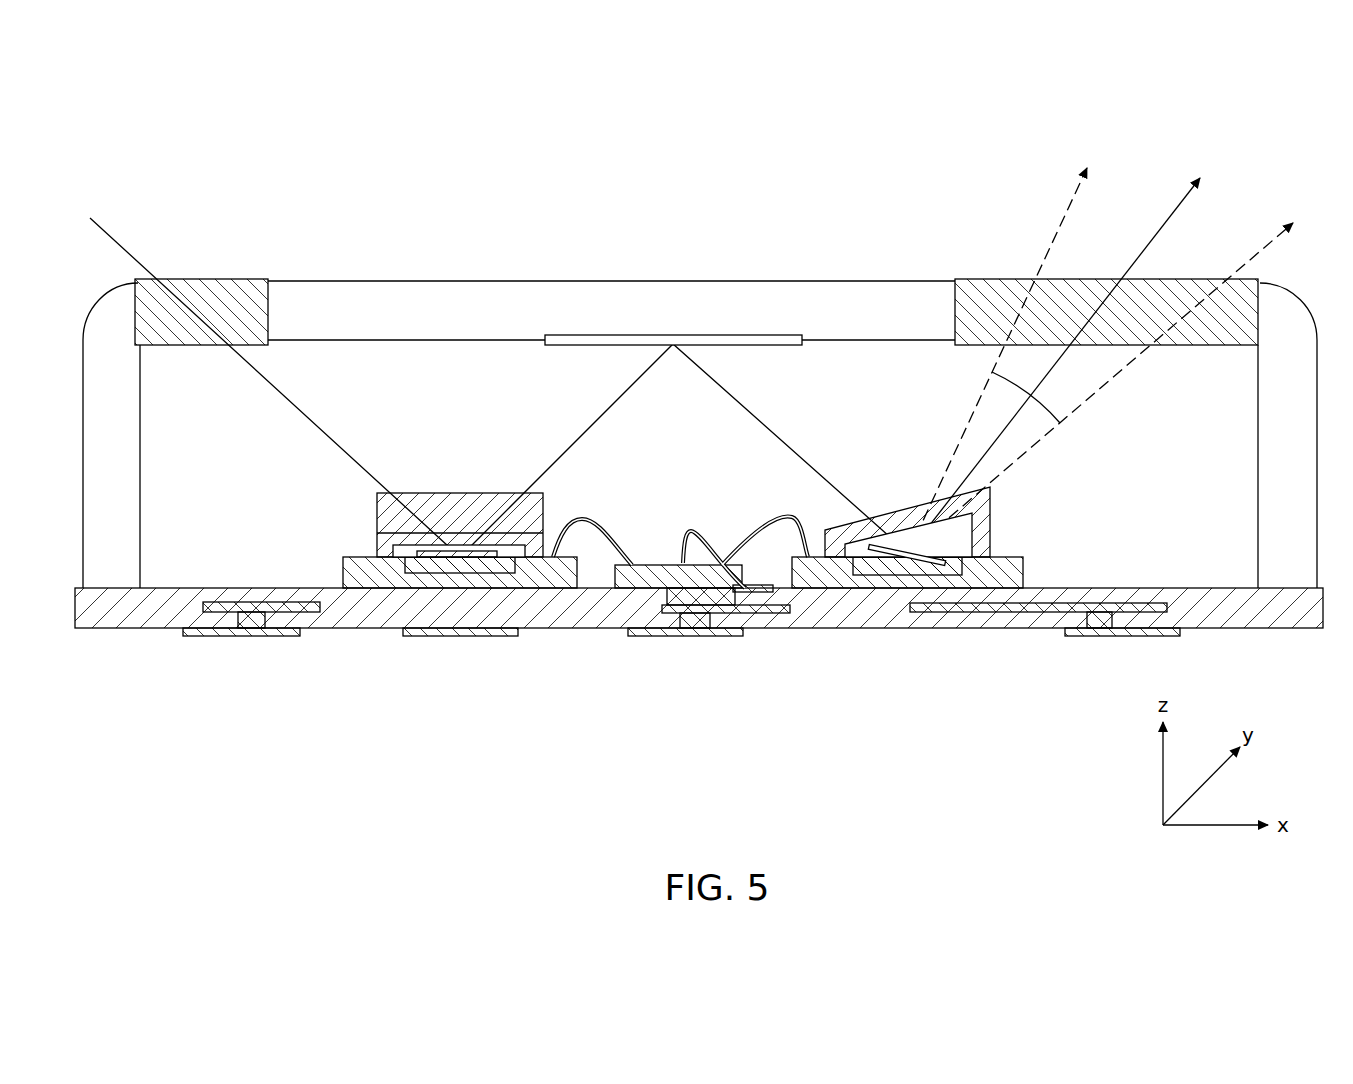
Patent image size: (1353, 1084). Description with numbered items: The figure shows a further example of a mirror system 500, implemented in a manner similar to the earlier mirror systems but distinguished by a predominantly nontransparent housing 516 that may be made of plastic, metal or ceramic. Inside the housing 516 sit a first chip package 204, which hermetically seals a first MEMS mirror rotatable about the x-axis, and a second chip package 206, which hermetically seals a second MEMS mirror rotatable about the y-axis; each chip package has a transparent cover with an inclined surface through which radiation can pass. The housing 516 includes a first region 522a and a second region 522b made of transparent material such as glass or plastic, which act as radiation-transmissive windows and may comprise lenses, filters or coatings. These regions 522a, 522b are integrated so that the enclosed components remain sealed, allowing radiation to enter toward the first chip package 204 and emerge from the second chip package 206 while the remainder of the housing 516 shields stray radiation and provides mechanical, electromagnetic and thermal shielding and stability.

The mirror system 500 is at (1203, 135).
The housing 516 is at (856, 282).
The first region 522a is at (228, 292).
The second region 522b is at (1098, 280).
The first chip package 204 is at (450, 468).
The second chip package 206 is at (888, 497).